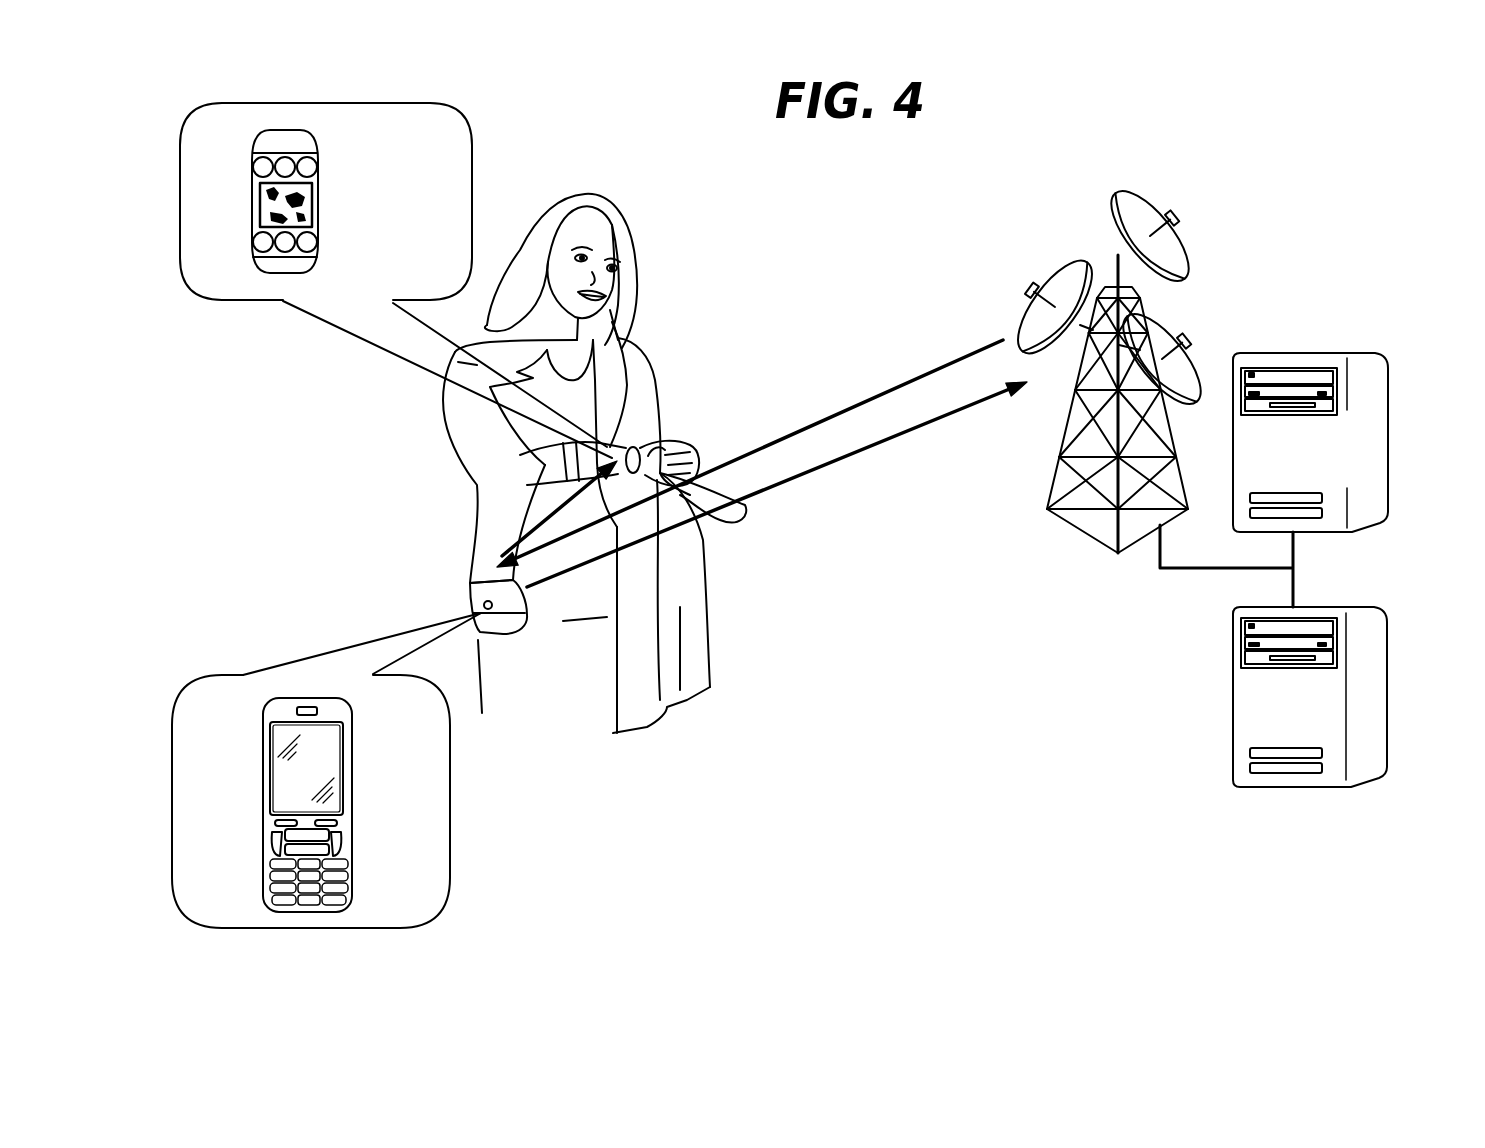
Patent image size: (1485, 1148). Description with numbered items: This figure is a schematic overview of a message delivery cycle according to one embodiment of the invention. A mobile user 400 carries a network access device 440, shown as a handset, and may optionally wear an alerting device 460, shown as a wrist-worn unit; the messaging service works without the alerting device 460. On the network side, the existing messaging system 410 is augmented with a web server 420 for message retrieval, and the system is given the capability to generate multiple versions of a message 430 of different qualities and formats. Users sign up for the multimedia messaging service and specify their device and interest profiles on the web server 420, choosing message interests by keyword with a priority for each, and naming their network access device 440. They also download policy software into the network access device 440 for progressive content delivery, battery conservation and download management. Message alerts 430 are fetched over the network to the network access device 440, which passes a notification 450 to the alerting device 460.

The user 400 is at (708, 480).
The messaging system 410 is at (1383, 432).
The web server 420 is at (1380, 683).
The multiple versions of a message 430 is at (848, 456).
The network access device 440 is at (263, 765).
The notification 450 is at (507, 521).
The alerting device 460 is at (255, 205).